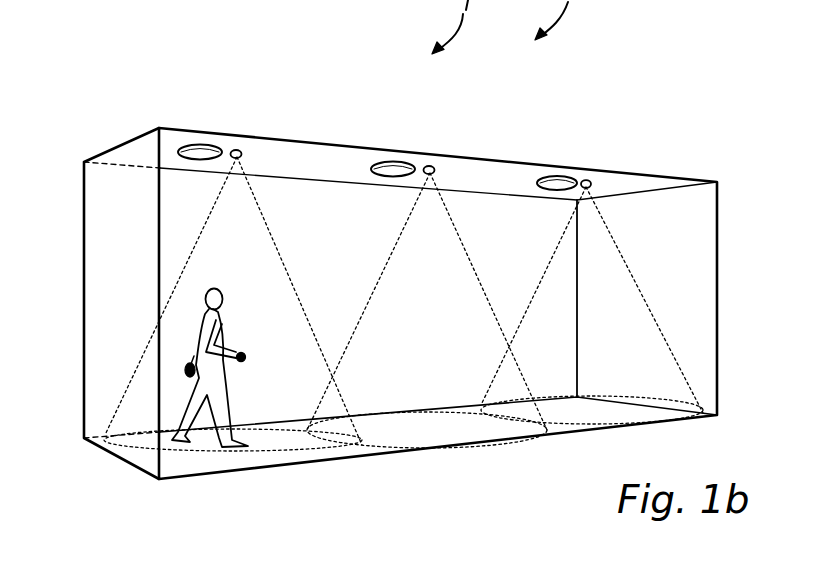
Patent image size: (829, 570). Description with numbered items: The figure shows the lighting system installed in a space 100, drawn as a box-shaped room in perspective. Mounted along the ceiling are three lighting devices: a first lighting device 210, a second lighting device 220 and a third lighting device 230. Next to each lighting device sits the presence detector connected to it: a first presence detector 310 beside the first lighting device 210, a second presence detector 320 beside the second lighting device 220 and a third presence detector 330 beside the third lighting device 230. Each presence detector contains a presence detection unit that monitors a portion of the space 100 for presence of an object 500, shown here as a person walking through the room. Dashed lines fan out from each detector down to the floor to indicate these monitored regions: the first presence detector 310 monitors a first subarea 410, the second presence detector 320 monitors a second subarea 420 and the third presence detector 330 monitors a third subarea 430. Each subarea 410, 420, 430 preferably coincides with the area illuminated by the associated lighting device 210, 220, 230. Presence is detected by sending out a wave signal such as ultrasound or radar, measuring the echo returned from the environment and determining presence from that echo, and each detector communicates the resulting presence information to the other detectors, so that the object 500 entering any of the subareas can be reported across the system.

The space 100 is at (103, 226).
The first lighting device 210 is at (200, 144).
The second lighting device 220 is at (392, 161).
The third lighting device 230 is at (556, 176).
The first presence detector 310 is at (241, 152).
The second presence detector 320 is at (434, 167).
The third presence detector 330 is at (590, 181).
The first subarea 410 is at (292, 278).
The second subarea 420 is at (481, 279).
The third subarea 430 is at (631, 266).
The object 500 is at (225, 339).